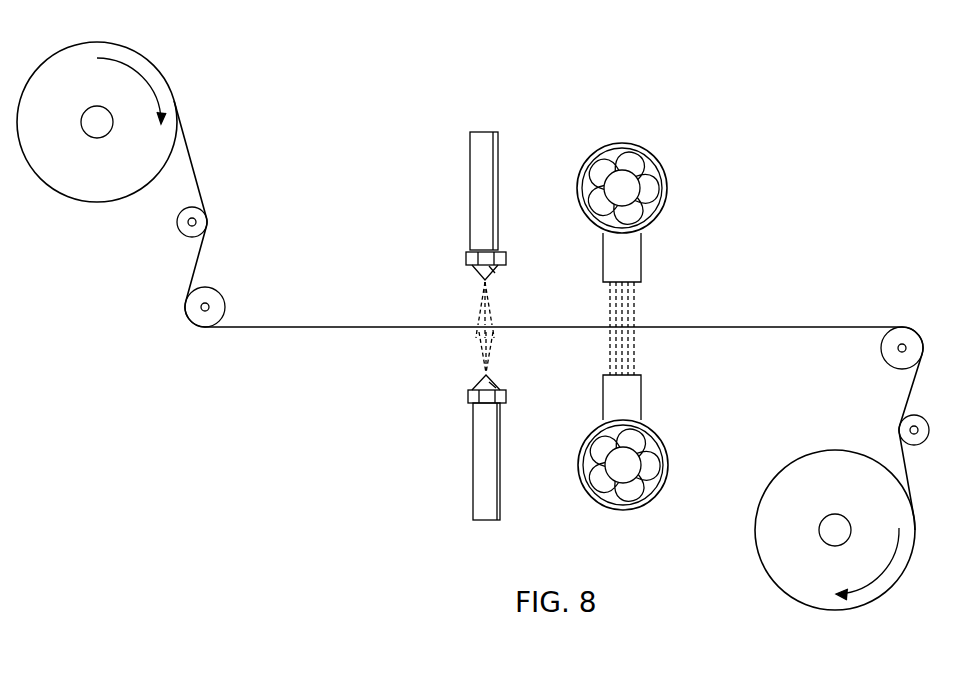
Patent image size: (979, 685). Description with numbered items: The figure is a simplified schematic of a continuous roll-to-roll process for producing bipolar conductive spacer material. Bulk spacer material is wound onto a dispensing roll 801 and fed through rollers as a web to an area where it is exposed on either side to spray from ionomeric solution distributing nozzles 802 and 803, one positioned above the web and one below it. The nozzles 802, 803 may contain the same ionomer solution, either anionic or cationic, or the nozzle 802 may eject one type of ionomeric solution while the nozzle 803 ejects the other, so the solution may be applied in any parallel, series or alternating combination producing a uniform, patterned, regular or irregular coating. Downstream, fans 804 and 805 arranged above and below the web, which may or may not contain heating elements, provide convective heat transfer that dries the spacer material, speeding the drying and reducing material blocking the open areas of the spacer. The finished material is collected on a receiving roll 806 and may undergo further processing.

The dispensing roll 801 is at (48, 60).
The ionomeric solution distributing nozzle 802 is at (470, 192).
The ionomeric solution distributing nozzle 803 is at (471, 461).
The fan 804 is at (627, 143).
The fan 805 is at (630, 511).
The receiving roll 806 is at (894, 585).